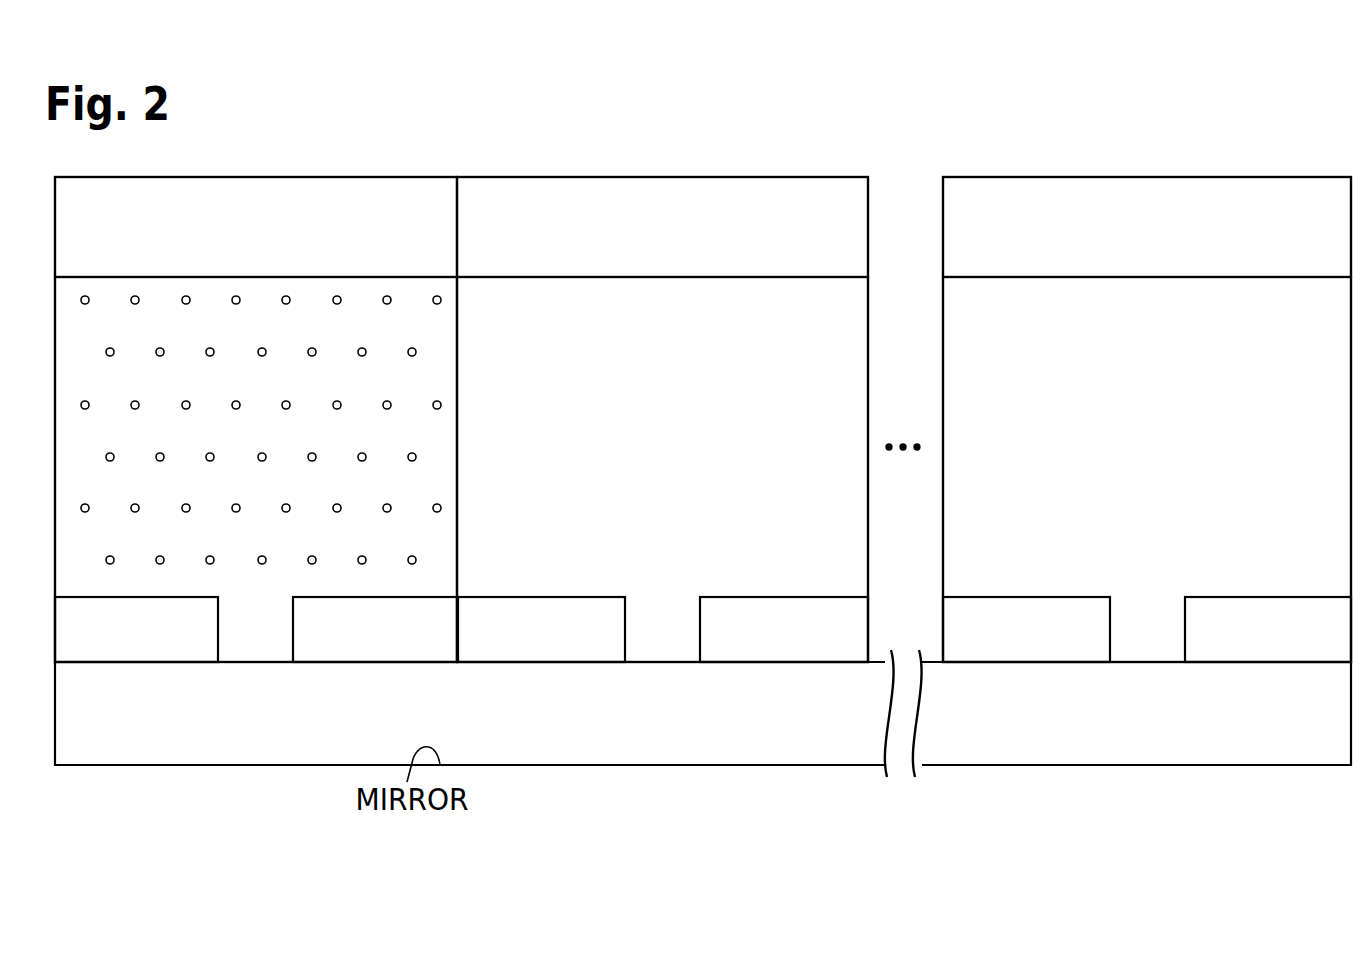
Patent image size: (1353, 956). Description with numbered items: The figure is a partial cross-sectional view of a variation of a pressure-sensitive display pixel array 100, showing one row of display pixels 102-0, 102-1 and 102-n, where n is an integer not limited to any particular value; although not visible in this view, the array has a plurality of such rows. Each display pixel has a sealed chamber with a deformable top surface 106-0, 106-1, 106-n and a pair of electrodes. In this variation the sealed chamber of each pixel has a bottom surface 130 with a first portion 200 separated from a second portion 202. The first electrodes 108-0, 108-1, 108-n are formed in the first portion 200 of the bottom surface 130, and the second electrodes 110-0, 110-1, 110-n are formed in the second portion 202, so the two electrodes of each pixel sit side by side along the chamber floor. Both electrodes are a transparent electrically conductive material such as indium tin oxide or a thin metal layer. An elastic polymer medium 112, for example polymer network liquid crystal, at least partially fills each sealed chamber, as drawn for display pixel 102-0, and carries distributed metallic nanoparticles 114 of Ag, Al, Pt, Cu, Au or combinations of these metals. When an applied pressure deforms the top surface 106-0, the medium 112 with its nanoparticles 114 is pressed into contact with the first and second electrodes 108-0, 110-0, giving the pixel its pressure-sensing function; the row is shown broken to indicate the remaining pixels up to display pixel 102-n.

The array 100 is at (1153, 125).
The display pixel 102-0 is at (260, 392).
The display pixel 102-1 is at (626, 392).
The display pixel 102-n is at (1110, 386).
The top surface 106-0 is at (260, 239).
The top surface 106-1 is at (626, 239).
The top surface 106-n is at (1110, 239).
The first electrode 108-0 is at (100, 641).
The first electrode 108-1 is at (504, 641).
The first electrode 108-n is at (990, 641).
The second electrode 110-0 is at (338, 641).
The second electrode 110-1 is at (748, 641).
The second electrode 110-n is at (1232, 641).
The elastic polymer medium 112 is at (276, 499).
The metallic nanoparticles 114 is at (135, 410).
The bottom surface 130 is at (458, 662).
The first portion 200 is at (133, 675).
The second portion 202 is at (375, 675).